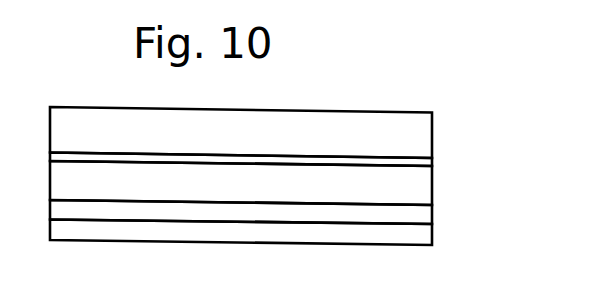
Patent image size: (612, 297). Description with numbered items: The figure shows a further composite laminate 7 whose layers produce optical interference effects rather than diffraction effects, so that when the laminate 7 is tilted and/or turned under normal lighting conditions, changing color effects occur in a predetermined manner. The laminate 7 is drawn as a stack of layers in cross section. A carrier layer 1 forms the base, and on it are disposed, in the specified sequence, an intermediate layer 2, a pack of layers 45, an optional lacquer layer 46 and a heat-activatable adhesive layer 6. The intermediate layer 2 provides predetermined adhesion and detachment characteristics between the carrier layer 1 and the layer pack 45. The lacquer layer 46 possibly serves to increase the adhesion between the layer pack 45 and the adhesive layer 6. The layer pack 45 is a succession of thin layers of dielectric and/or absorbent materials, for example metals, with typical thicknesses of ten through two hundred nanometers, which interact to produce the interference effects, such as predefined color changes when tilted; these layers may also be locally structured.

The carrier layer 1 is at (418, 133).
The intermediate layer 2 is at (419, 161).
The pack of layers 45 is at (412, 187).
The lacquer layer 46 is at (418, 215).
The heat-activatable adhesive layer 6 is at (265, 237).
The laminate 7 is at (300, 178).